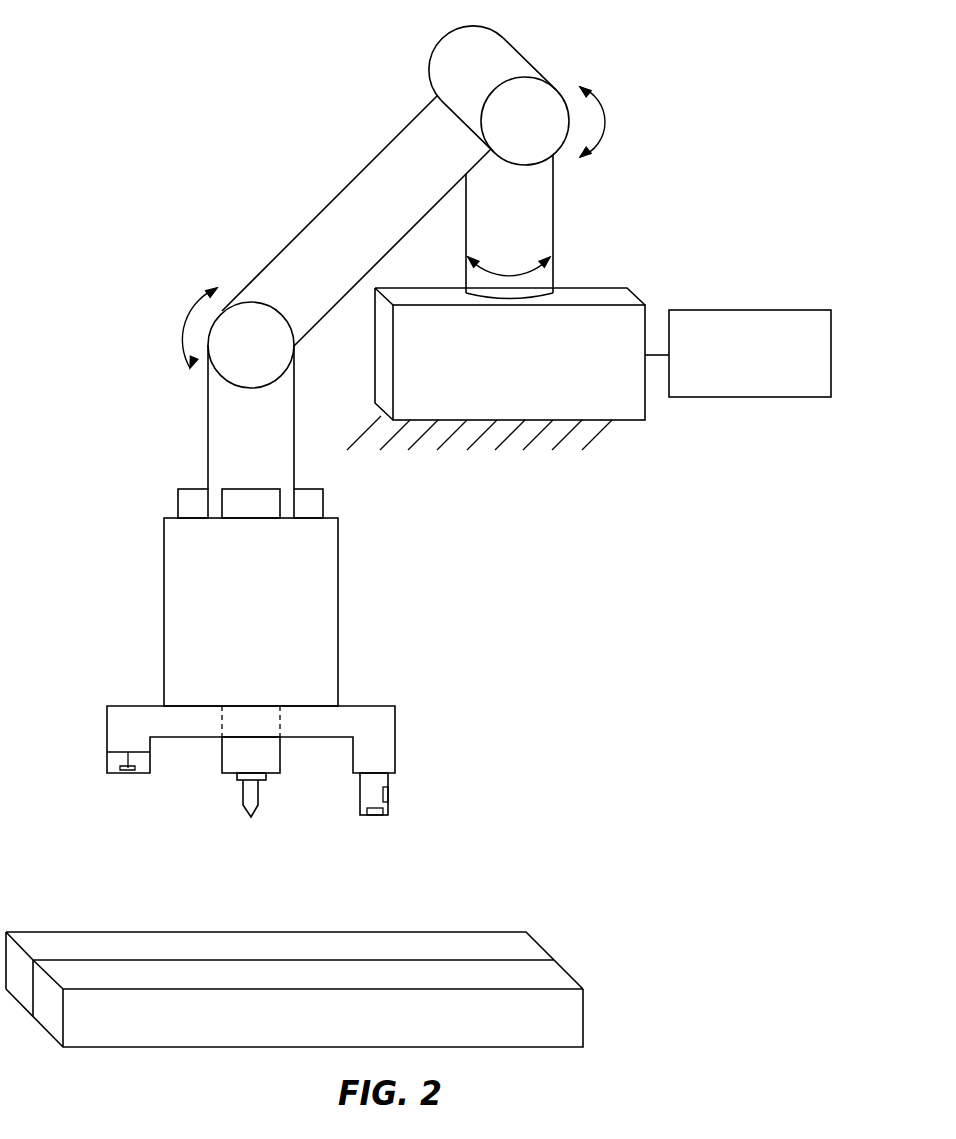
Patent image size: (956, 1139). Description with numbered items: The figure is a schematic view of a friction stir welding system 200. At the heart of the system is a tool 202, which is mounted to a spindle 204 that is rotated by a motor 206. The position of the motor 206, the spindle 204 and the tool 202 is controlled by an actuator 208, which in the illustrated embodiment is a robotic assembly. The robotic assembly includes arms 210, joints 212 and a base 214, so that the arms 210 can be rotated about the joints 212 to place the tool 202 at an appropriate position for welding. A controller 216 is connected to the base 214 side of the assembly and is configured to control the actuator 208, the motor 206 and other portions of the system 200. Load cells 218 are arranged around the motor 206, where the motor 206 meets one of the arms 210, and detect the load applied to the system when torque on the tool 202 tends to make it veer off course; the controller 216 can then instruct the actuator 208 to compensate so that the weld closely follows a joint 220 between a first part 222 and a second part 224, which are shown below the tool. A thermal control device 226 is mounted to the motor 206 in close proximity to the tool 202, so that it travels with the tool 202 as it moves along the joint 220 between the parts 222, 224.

The friction stir welding system 200 is at (135, 65).
The tool 202 is at (222, 817).
The spindle 204 is at (281, 758).
The motor 206 is at (164, 617).
The actuator 208 is at (308, 167).
The arms 210 is at (303, 230).
The joints 212 is at (522, 53).
The base 214 is at (645, 420).
The controller 216 is at (712, 310).
The load cells 218 is at (178, 489).
The joint 220 is at (482, 960).
The first part 222 is at (545, 948).
The second part 224 is at (568, 972).
The thermal control device 226 is at (440, 700).